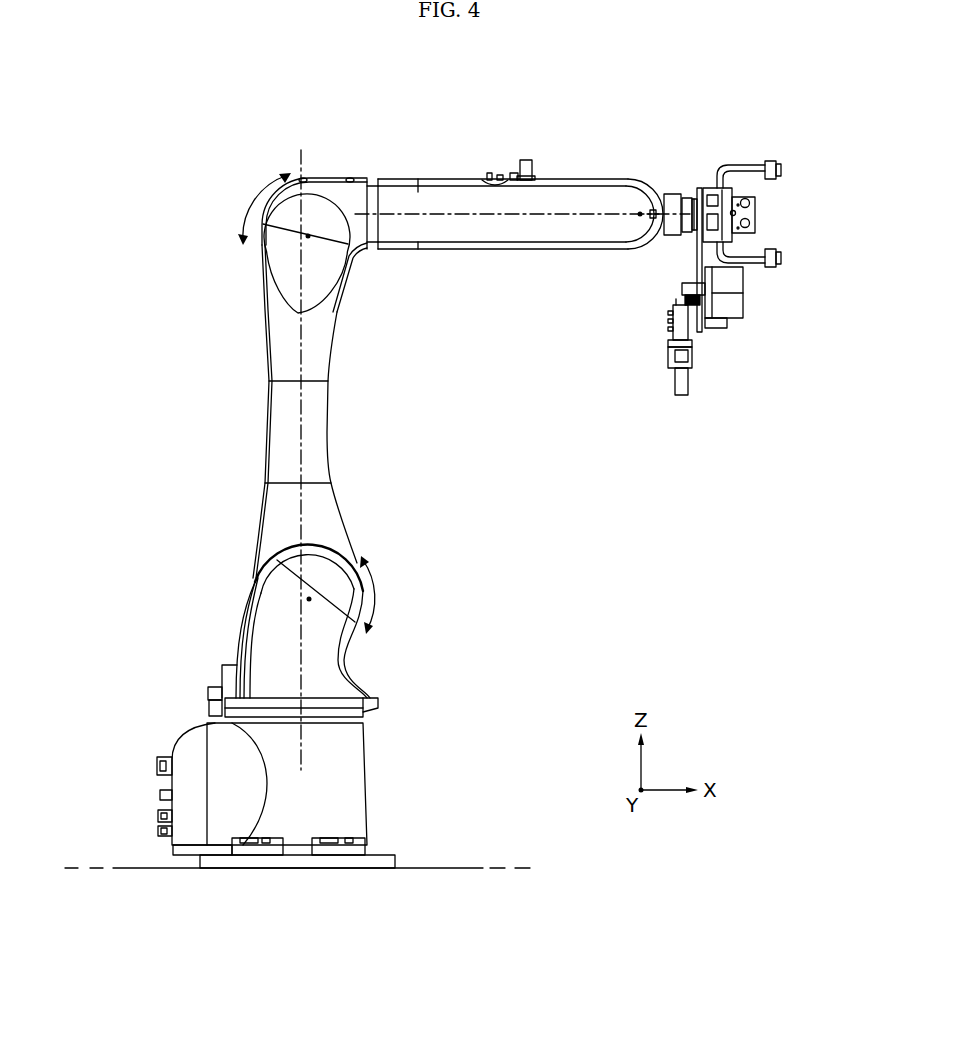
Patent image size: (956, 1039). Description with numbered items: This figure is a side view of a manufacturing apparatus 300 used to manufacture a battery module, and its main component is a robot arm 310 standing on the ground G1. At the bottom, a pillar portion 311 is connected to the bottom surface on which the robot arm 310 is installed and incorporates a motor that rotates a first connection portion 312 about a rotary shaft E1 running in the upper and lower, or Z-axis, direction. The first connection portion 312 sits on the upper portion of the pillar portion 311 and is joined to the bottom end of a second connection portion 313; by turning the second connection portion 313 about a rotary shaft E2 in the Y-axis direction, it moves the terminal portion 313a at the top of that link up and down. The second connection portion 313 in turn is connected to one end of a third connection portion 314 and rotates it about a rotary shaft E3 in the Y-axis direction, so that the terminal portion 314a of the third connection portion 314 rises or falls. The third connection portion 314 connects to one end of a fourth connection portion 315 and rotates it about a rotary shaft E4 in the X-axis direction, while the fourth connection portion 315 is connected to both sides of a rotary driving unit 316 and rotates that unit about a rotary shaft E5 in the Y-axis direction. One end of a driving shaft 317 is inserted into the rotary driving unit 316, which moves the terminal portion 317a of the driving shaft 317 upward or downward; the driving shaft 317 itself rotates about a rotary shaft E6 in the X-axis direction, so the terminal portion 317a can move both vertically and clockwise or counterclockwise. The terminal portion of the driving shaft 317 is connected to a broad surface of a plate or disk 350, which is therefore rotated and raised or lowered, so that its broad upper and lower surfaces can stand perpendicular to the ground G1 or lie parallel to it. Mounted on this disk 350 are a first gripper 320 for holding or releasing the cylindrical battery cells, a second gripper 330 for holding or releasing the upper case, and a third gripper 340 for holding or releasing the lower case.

The manufacturing apparatus 300 is at (278, 82).
The robot arm 310 is at (333, 145).
The pillar portion 311 is at (325, 782).
The first connection portion 312 is at (315, 667).
The second connection portion 313 is at (265, 430).
The terminal portion of the second connection portion 313a is at (290, 228).
The third connection portion 314 is at (318, 178).
The terminal portion of the third connection portion 314a is at (376, 183).
The fourth connection portion 315 is at (437, 179).
The rotary driving unit 316 is at (632, 190).
The driving shaft 317 is at (673, 194).
The terminal portion of the driving shaft 317a is at (702, 188).
The first gripper 320 is at (662, 332).
The second gripper 330 is at (768, 212).
The third gripper 340 is at (751, 158).
The plate (disk) 350 is at (697, 257).
The rotary shaft E1 is at (300, 518).
The rotary shaft E2 is at (309, 599).
The rotary shaft E3 is at (308, 236).
The rotary shaft E4 is at (545, 213).
The rotary shaft E5 is at (640, 213).
The rotary shaft E6 is at (693, 197).
The ground G1 is at (445, 868).